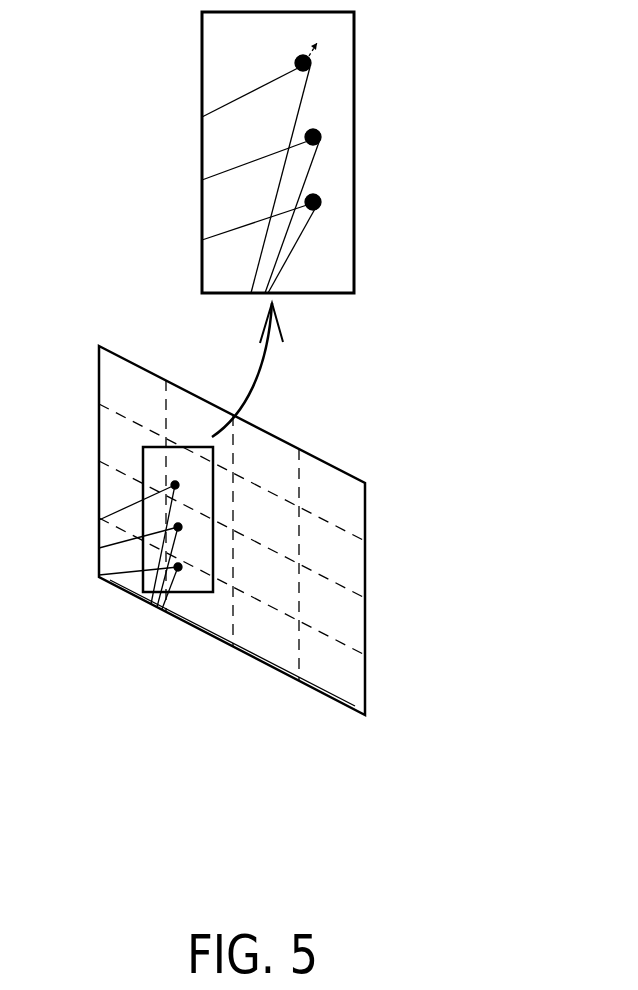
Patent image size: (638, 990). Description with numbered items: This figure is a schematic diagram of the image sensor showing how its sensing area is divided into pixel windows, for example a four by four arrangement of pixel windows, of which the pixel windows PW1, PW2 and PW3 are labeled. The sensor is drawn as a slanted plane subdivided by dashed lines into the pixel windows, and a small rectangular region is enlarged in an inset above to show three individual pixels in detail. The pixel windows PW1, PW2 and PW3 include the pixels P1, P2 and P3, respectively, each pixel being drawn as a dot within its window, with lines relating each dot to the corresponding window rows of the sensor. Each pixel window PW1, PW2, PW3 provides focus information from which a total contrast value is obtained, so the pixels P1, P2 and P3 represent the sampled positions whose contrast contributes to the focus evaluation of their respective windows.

The pixel P1 is at (170, 634).
The pixel P2 is at (186, 539).
The pixel P3 is at (175, 484).
The pixel window PW1 is at (215, 618).
The pixel window PW2 is at (223, 555).
The pixel window PW3 is at (222, 490).